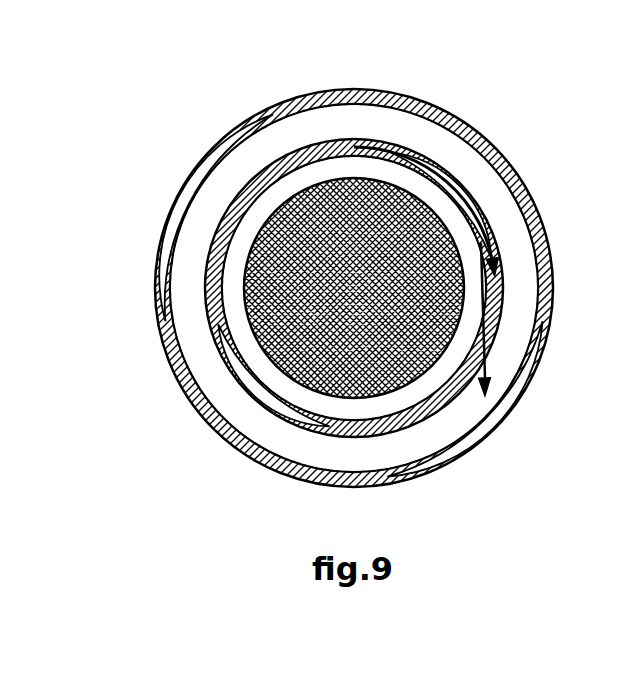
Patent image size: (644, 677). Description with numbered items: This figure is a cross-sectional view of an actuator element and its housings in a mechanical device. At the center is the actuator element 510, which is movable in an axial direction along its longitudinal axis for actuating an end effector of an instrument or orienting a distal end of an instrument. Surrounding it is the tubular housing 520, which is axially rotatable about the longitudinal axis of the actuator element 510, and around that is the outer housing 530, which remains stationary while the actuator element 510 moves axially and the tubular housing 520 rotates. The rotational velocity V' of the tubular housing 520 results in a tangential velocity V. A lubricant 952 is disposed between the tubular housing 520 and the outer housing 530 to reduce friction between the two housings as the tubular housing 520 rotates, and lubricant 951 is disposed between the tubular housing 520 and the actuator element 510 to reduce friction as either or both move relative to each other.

The actuator element 510 is at (284, 293).
The tubular housing 520 is at (209, 236).
The outer housing 530 is at (190, 156).
The lubricant 951 is at (253, 385).
The lubricant 952 is at (267, 123).
The tangential velocity V is at (533, 319).
The rotational velocity V' is at (453, 186).